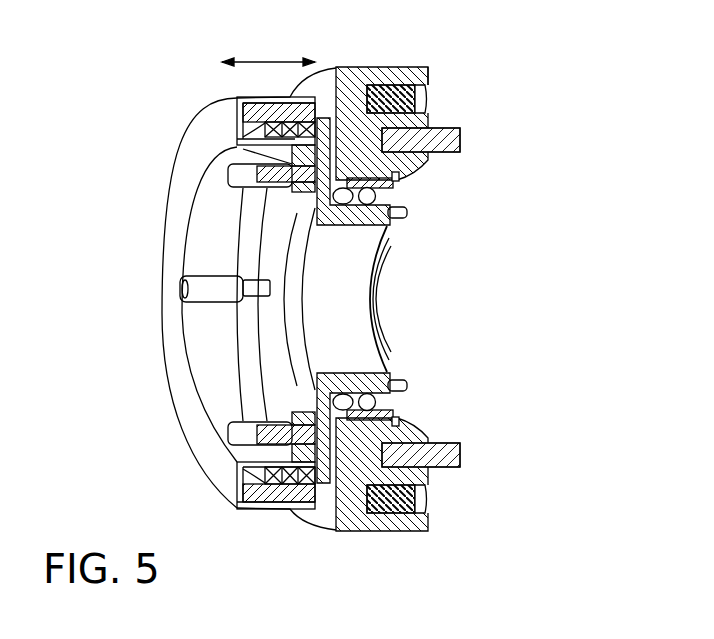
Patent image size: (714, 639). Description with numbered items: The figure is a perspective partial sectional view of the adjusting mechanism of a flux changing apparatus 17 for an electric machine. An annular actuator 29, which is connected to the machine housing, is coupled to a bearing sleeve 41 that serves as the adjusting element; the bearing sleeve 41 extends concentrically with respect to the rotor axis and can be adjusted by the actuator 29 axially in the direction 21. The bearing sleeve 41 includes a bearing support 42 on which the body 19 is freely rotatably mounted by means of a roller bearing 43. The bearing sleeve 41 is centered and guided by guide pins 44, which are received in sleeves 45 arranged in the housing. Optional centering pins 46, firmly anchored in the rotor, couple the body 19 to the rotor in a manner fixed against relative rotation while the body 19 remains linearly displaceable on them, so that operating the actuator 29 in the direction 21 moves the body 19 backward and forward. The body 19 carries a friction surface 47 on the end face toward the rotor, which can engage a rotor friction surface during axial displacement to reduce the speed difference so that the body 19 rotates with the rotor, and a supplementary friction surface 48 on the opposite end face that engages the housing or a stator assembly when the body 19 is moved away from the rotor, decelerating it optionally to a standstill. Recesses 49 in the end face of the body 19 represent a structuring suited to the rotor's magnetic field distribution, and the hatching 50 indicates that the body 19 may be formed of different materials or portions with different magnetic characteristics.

The flux changing apparatus 17 is at (208, 88).
The body 19 is at (377, 80).
The direction 21 is at (268, 62).
The annular actuator 29 is at (165, 173).
The bearing sleeve 41 is at (268, 243).
The bearing support 42 is at (386, 366).
The roller bearing 43 is at (378, 403).
The guide pin 44 is at (268, 174).
The sleeve 45 is at (205, 287).
The centering pin 46 is at (450, 137).
The friction surface 47 is at (440, 61).
The friction surface 48 is at (316, 514).
The recess 49 is at (442, 98).
The hatching 50 is at (393, 97).